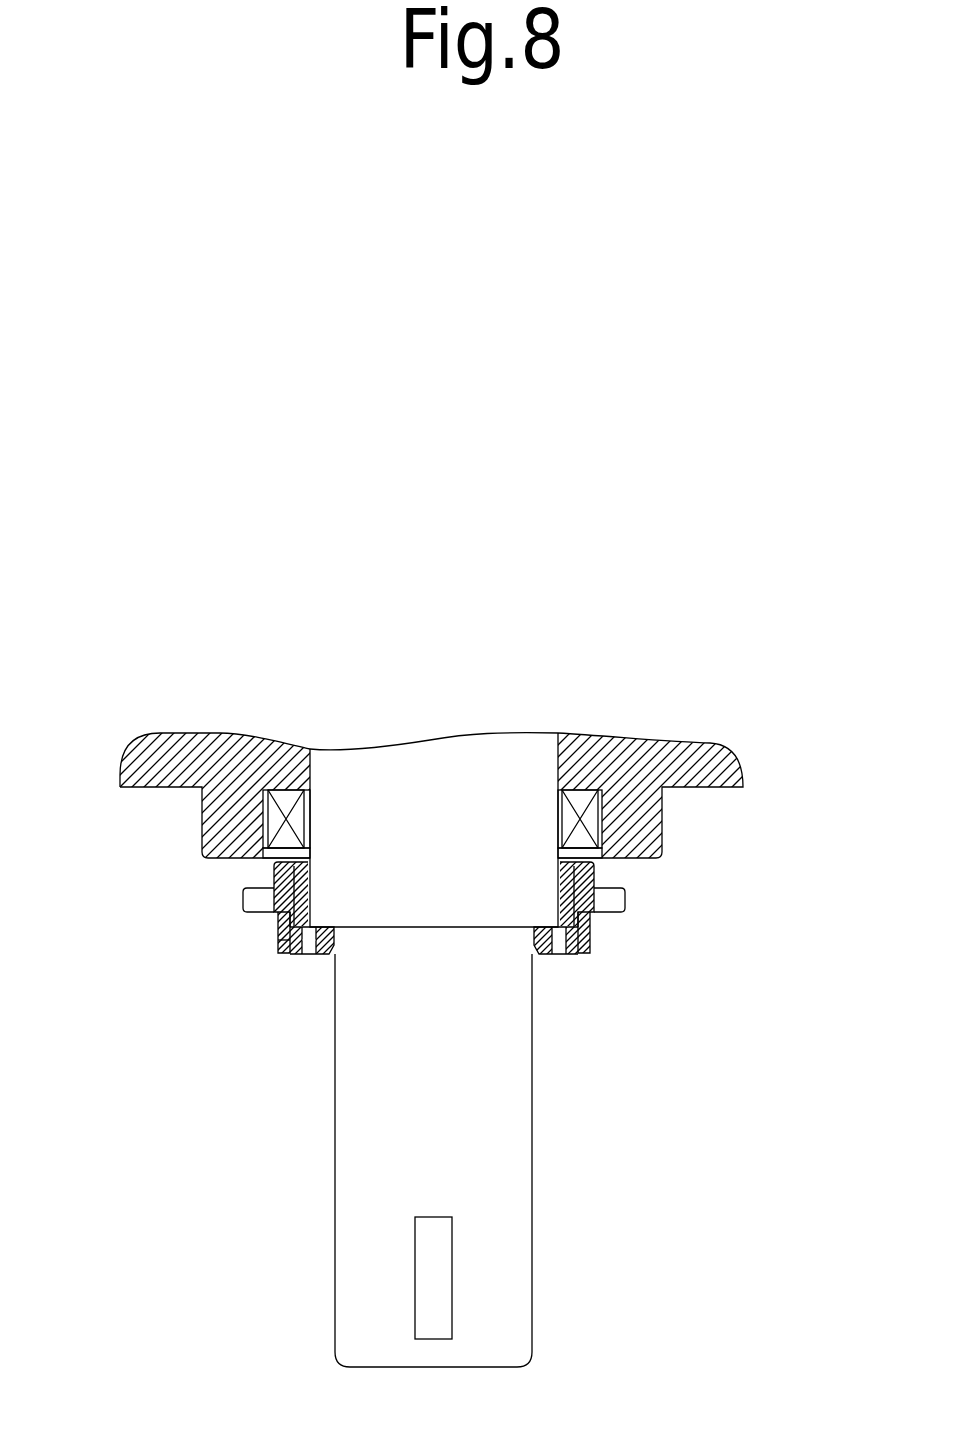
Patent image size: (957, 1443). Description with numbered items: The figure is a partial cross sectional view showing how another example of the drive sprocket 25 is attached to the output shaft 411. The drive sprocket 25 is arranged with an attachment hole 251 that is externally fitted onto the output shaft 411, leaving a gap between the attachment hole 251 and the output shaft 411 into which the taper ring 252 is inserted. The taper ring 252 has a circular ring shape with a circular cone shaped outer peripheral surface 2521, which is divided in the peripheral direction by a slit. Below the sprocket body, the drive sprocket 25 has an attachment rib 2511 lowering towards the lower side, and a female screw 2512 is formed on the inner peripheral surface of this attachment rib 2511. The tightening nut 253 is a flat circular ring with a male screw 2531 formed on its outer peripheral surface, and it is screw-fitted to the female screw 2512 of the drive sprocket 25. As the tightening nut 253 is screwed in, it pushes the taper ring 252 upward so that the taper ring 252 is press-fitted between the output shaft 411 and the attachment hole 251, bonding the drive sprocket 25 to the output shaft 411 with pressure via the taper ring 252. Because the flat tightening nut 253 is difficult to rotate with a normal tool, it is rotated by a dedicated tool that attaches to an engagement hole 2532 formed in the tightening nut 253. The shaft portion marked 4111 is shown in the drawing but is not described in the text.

The drive sprocket 25 is at (260, 897).
The attachment hole 251 is at (278, 878).
The attachment rib 2511 is at (280, 930).
The female screw 2512 is at (280, 942).
The taper ring 252 is at (558, 892).
The circular cone shaped outer peripheral surface 2521 is at (285, 878).
The tightening nut 253 is at (533, 950).
The male screw 2531 is at (588, 942).
The engagement hole 2532 is at (313, 951).
The output shaft 411 is at (365, 1110).
The upper shaft section 4111 is at (363, 925).